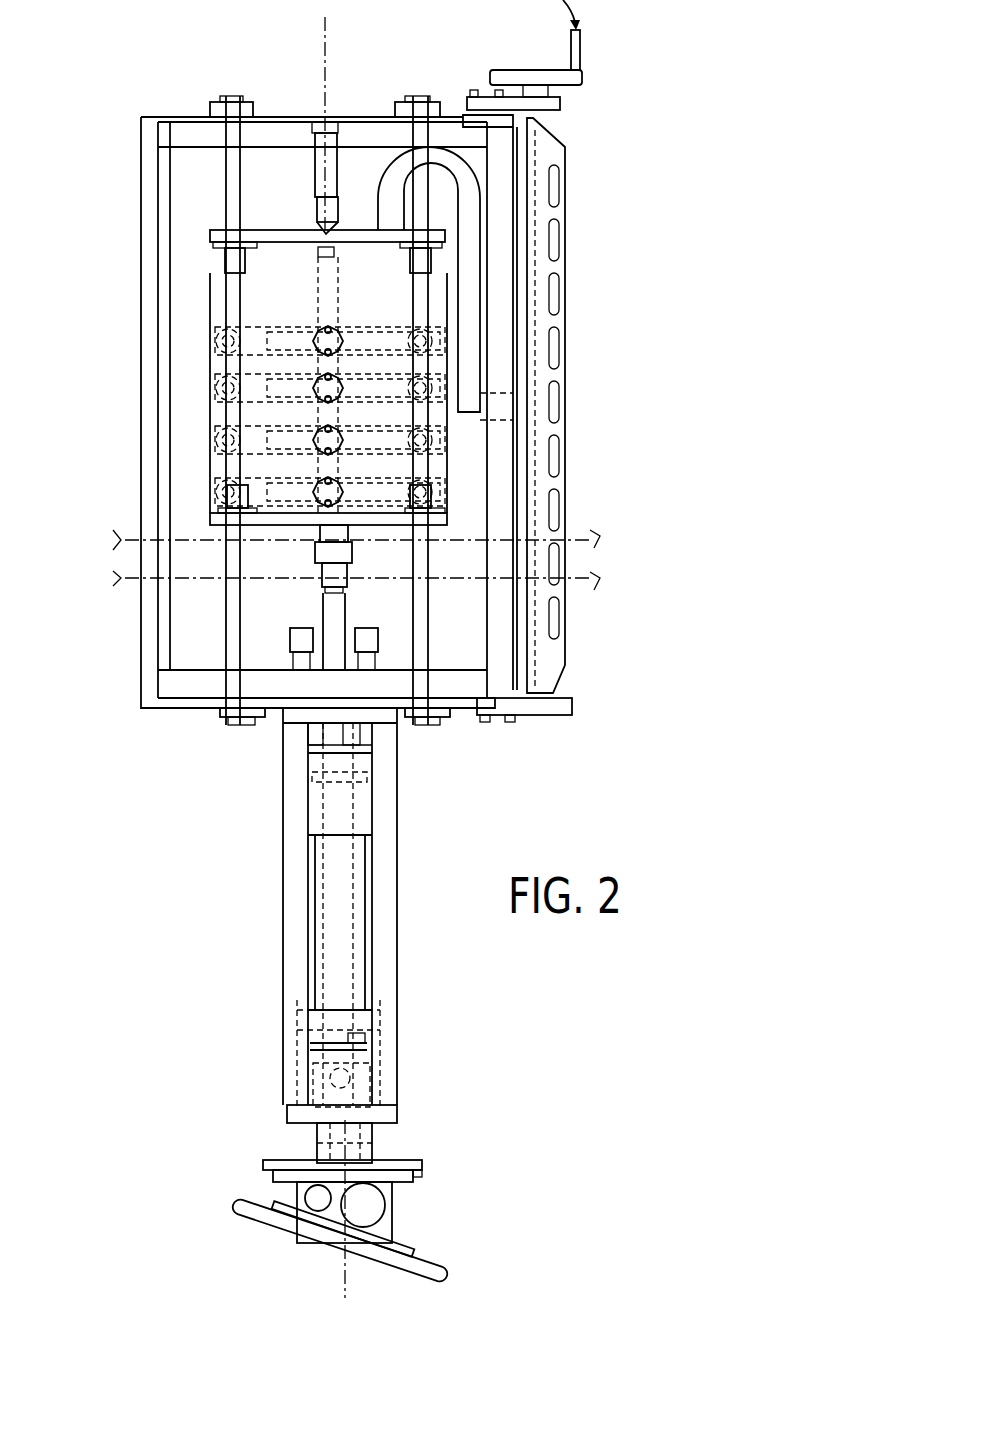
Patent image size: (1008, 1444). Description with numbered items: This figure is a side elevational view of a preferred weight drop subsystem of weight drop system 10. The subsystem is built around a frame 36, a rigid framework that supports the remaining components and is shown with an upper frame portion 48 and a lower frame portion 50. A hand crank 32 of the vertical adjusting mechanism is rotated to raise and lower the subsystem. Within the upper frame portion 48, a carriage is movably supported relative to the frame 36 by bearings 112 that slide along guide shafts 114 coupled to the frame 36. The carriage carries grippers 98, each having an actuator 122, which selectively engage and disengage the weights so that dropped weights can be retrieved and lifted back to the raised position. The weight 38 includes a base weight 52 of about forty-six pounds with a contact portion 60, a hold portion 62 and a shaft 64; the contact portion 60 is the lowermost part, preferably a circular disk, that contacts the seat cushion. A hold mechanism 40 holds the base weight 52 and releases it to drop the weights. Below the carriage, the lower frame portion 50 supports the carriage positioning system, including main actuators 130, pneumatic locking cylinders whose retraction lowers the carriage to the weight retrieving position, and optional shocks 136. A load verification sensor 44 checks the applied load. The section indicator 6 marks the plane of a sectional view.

The weight drop system 10 is at (159, 46).
The section line 6- 6 is at (325, 17).
The hand crank 32 is at (582, 73).
The frame 36 is at (142, 228).
The upper frame portion 48 is at (145, 420).
The guide shafts 114 is at (232, 205).
The bearings 112 is at (226, 265).
The actuator 122 is at (320, 332).
The grippers 98 is at (250, 347).
The shaft 64 is at (350, 601).
The weight 38 is at (322, 610).
The shocks 136 is at (292, 642).
The lower frame portion 50 is at (283, 912).
The main actuators 130 is at (370, 947).
The load verification sensor 44 is at (380, 1055).
The hold mechanism 40 is at (373, 1148).
The hold portion 62 is at (422, 1164).
The base weight 52 is at (405, 1228).
The contact portion 60 is at (237, 1212).